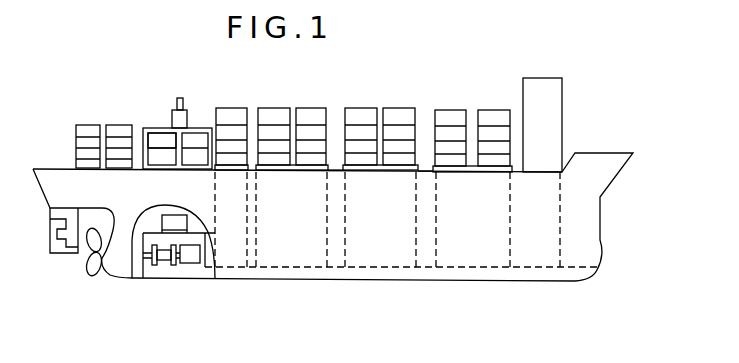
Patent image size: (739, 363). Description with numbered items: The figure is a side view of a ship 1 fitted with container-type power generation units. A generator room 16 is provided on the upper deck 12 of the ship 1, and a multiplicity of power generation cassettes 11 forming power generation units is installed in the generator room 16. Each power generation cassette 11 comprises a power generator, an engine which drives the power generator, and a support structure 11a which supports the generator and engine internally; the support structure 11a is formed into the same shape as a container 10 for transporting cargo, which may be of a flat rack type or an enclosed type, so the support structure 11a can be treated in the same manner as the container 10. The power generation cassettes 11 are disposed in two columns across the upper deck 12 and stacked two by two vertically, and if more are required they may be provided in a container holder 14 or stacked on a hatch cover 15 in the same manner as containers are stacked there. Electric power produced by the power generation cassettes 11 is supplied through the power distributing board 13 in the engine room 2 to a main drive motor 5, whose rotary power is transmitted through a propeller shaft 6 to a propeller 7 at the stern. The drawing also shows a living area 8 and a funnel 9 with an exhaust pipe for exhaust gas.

The ship 1 is at (601, 150).
The engine room 2 is at (198, 229).
The main drive motor 5 is at (190, 256).
The propeller shaft 6 is at (167, 259).
The propeller 7 is at (92, 272).
The living area 8 is at (562, 83).
The funnel and exhaust pipe 9 is at (187, 112).
The container 10 is at (87, 124).
The power generation cassette 11 is at (148, 130).
The support structure 11a is at (162, 140).
The upper deck 12 is at (332, 168).
The power distributing board 13 is at (164, 238).
The container holder 14 is at (389, 258).
The hatch cover 15 is at (418, 168).
The generator room 16 is at (198, 127).